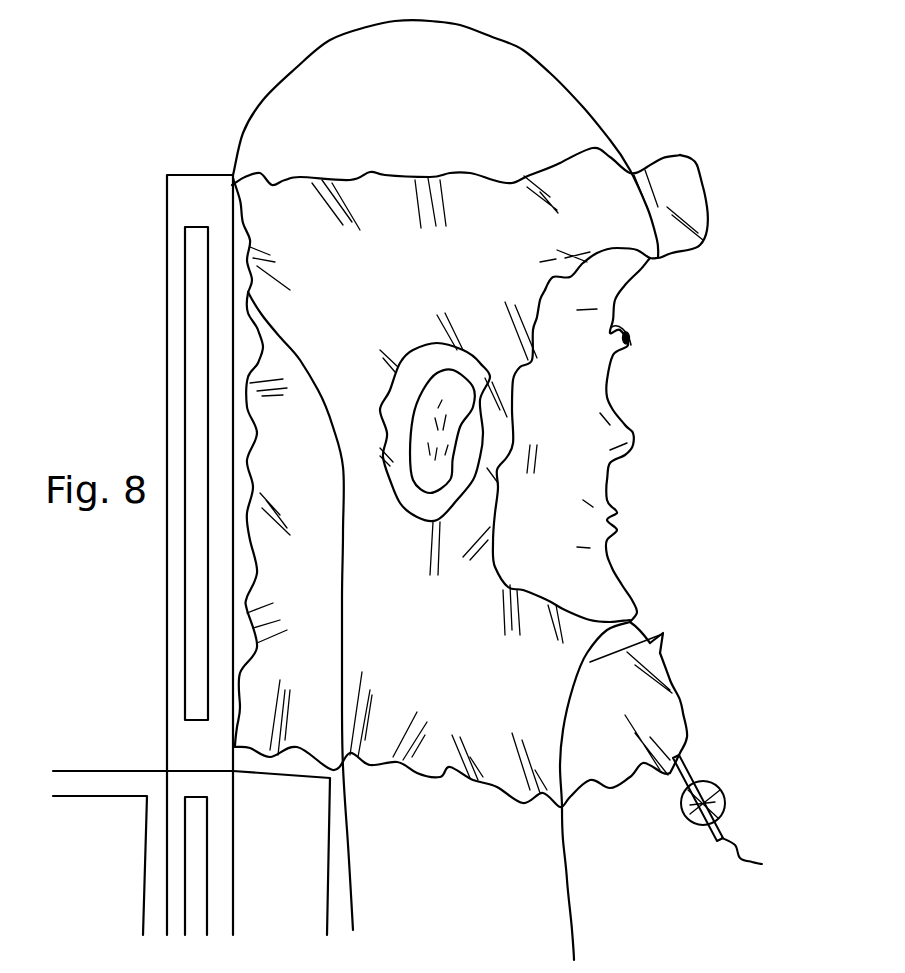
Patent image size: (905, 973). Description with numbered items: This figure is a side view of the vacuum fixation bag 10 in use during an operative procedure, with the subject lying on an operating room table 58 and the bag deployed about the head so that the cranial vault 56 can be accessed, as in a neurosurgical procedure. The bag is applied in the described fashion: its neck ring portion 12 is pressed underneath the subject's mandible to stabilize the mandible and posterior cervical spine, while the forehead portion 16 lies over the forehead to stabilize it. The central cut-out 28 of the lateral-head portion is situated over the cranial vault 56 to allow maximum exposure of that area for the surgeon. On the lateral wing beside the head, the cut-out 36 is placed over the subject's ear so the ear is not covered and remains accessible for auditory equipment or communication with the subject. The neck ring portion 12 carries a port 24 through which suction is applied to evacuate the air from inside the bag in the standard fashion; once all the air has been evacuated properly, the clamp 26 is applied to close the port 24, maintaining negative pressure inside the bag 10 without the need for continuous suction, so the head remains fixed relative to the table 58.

The vacuum fixation bag 10 is at (378, 290).
The neck-ring portion 12 is at (663, 651).
The forehead portion 16 is at (667, 183).
The port 24 is at (731, 821).
The valve or clamp 26 is at (720, 790).
The central cut-out 28 is at (380, 207).
The ear cut-out 36 is at (412, 388).
The cranial vault 56 is at (445, 139).
The operating room table 58 is at (202, 214).